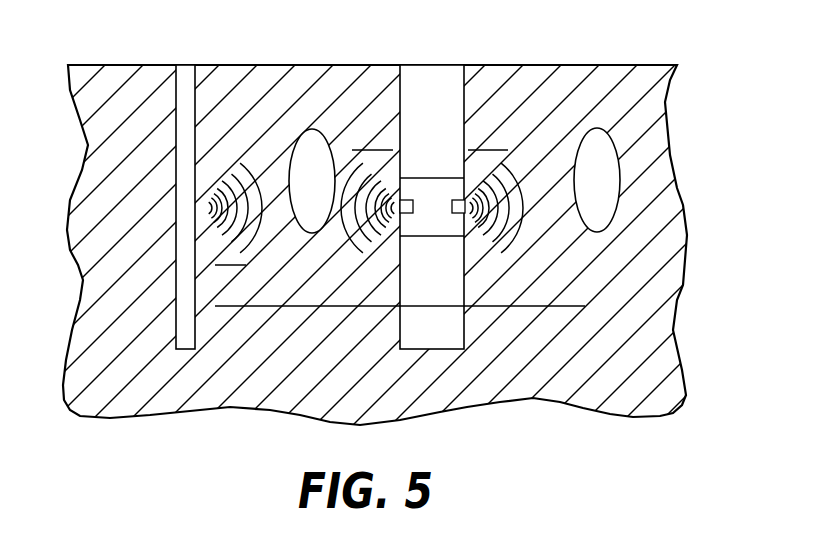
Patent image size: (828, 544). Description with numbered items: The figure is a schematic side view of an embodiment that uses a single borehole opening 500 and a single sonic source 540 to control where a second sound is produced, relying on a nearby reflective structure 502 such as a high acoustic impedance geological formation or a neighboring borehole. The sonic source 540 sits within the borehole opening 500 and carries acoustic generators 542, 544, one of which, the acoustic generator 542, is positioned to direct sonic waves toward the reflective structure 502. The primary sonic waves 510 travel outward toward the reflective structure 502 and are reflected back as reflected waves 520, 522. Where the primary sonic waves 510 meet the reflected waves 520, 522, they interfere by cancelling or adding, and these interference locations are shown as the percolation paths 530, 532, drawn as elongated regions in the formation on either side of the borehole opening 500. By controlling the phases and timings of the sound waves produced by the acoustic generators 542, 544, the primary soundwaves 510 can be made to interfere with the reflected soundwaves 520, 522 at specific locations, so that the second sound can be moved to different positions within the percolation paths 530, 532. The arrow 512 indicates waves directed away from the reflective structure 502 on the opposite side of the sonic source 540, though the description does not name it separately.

The borehole opening 500 is at (431, 67).
The reflective structure 502 is at (182, 350).
The sonic waves 510 is at (368, 149).
The second direction arrow 512 is at (490, 149).
The reflected waves 520 is at (228, 270).
The reflected waves 522 is at (290, 307).
The percolation path 530 is at (305, 131).
The percolation path 532 is at (600, 232).
The sonic source 540 is at (433, 178).
The acoustic generator 542 is at (405, 214).
The acoustic generator 544 is at (457, 214).